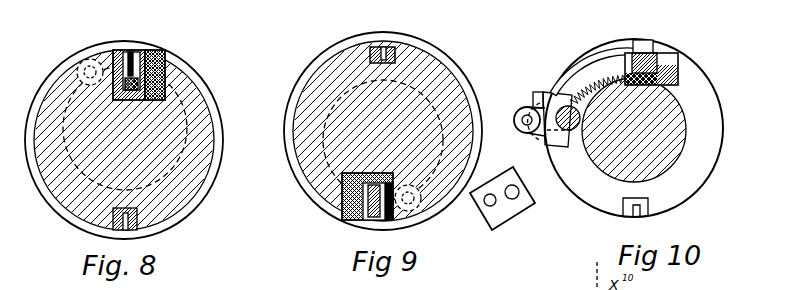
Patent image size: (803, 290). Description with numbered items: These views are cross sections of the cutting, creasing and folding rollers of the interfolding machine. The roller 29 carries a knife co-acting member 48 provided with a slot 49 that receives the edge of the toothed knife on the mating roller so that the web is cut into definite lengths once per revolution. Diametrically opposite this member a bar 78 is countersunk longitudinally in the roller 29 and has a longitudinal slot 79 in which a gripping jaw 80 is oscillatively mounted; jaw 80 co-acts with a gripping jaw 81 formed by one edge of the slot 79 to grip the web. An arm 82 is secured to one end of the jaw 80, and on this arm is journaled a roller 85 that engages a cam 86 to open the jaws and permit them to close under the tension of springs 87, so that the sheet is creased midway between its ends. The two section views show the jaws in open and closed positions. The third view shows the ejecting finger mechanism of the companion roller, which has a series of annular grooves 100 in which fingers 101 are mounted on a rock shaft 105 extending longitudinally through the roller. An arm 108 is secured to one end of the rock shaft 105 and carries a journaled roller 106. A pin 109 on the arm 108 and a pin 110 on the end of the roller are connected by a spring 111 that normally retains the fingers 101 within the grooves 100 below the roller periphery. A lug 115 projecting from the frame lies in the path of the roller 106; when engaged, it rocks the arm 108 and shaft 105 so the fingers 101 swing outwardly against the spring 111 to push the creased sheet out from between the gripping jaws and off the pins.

In FIG. 8, the roller 29 is at (213, 108).
In FIG. 9, the roller 29 is at (300, 110).
In FIG. 9, the knife co-acting member 48 is at (400, 47).
In FIG. 9, the slot 49 is at (385, 43).
In FIG. 9, the bar 78 is at (360, 215).
In FIG. 9, the longitudinal slot 79 is at (380, 223).
In FIG. 8, the gripping jaw 80 is at (135, 55).
In FIG. 9, the gripping jaw 80 is at (367, 218).
In FIG. 8, the gripping jaw 81 is at (130, 55).
In FIG. 9, the gripping jaw 81 is at (400, 222).
In FIG. 8, the arm 82 is at (113, 60).
In FIG. 8, the roller 85 is at (80, 68).
In FIG. 8, the cam 86 is at (70, 173).
In FIG. 8, the springs 87 is at (167, 62).
In FIG. 10, the annular grooves 100 is at (634, 128).
In FIG. 10, the fingers 101 is at (665, 53).
In FIG. 10, the rock shaft 105 is at (570, 132).
In FIG. 10, the roller 106 is at (495, 108).
In FIG. 10, the arm 108 is at (530, 108).
In FIG. 10, the pin 109 is at (538, 93).
In FIG. 10, the pin 110 is at (683, 72).
In FIG. 10, the spring 111 is at (578, 100).
In FIG. 10, the lug 115 is at (535, 193).